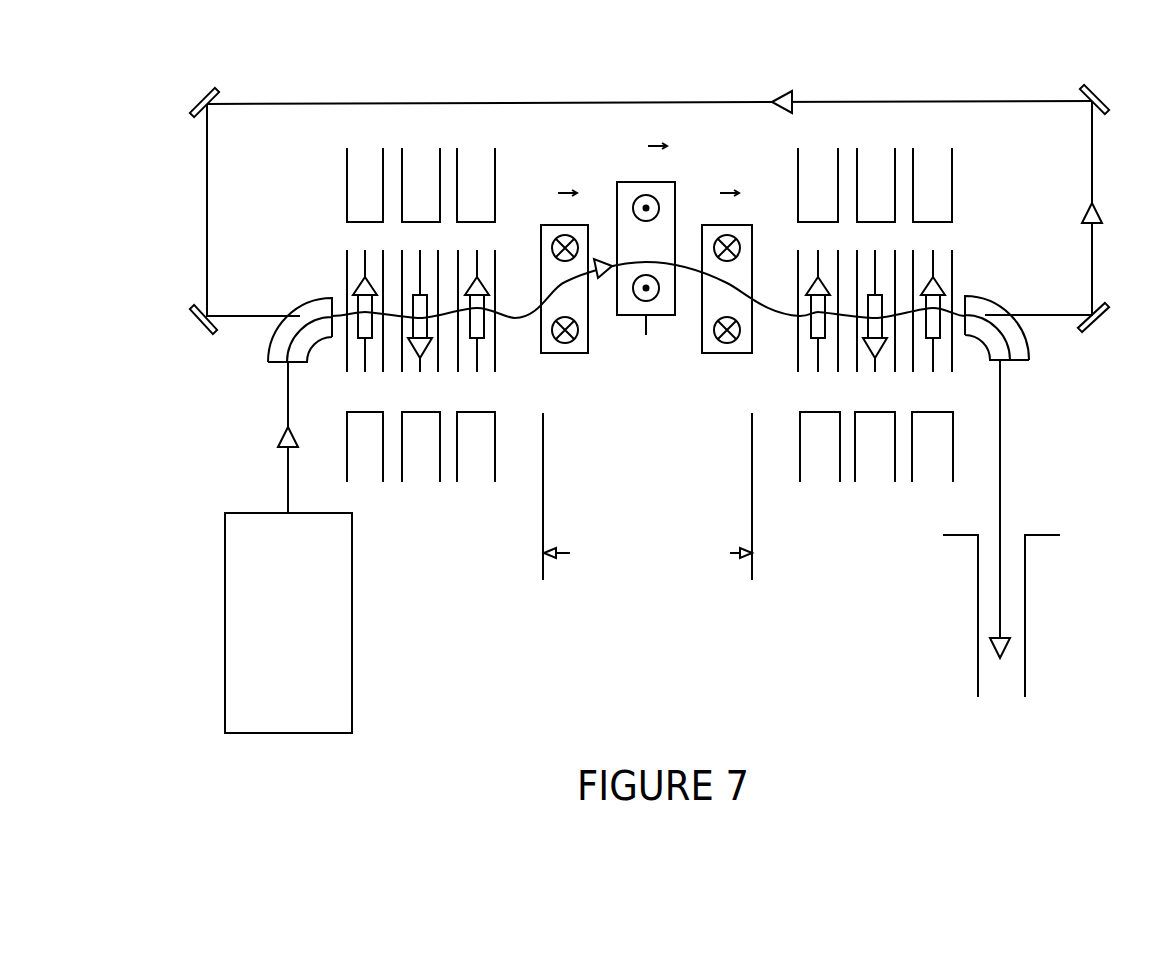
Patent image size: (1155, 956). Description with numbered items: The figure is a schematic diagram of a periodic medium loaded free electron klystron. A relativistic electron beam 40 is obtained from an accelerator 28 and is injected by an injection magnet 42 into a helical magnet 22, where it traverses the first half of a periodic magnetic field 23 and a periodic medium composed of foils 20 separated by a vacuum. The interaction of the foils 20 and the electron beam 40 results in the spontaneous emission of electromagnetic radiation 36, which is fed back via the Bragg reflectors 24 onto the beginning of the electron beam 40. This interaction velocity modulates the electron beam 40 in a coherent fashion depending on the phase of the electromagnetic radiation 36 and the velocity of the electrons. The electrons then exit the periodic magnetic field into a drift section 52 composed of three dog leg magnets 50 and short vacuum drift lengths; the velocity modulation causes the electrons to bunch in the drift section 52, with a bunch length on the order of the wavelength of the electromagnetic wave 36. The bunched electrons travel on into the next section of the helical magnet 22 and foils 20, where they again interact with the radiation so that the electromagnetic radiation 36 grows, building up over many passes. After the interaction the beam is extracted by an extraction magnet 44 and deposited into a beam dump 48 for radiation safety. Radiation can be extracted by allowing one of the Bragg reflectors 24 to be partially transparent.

The foils 20 is at (345, 265).
The helical magnet 22 is at (495, 183).
The periodic magnetic field 23 is at (478, 343).
The Bragg reflectors 24 is at (649, 216).
The accelerator 28 is at (352, 595).
The electromagnetic radiation 36 is at (645, 102).
The electron beam 40 is at (512, 318).
The injection magnet 42 is at (308, 298).
The extraction magnet 44 is at (1007, 303).
The beam dump 48 is at (978, 613).
The dog leg magnets 50 is at (722, 355).
The drift section 52 is at (647, 501).